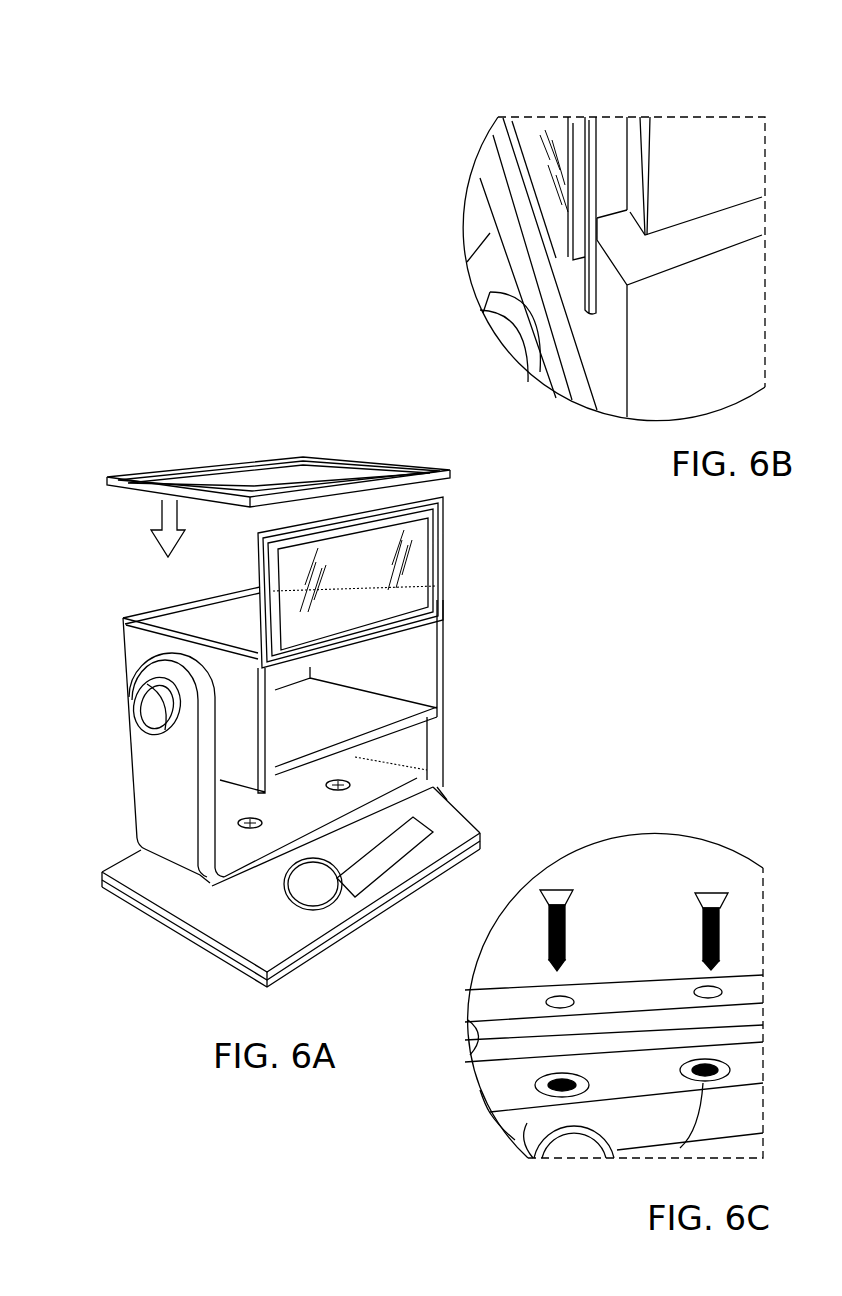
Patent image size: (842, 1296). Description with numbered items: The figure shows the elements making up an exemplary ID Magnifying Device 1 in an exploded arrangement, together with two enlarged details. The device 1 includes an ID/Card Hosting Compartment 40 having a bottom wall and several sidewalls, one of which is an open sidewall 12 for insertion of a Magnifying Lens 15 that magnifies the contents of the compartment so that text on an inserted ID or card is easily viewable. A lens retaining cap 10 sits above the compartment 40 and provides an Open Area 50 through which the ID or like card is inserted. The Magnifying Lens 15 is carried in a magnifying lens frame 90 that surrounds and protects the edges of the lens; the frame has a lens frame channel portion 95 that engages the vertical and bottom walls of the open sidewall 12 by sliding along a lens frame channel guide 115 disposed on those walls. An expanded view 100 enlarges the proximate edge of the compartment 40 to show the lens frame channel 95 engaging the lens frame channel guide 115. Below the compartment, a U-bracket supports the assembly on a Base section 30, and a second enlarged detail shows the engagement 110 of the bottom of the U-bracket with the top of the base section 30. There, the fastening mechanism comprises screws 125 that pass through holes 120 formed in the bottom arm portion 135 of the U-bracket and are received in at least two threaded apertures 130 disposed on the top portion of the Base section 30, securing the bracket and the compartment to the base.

In FIG. 6A, the ID Magnifying Device 1 is at (283, 330).
In FIG. 6A, the lens retaining cap 10 is at (176, 474).
In FIG. 6A, the open sidewall 12 is at (380, 712).
In FIG. 6A, the Magnifying Lens 15 is at (444, 548).
In FIG. 6A, the Base section 30 is at (153, 872).
In FIG. 6A, the ID/Card Hosting Compartment 40 is at (225, 718).
In FIG. 6A, the Open Area 50 is at (260, 477).
In FIG. 6A, the magnifying lens frame 90 is at (453, 471).
In FIG. 6A, the lens frame channel portion 95 is at (258, 617).
In FIG. 6B, the lens frame channel portion 95 is at (622, 140).
In FIG. 6A, the expanded view 100 is at (240, 672).
In FIG. 6B, the expanded view 100 is at (455, 226).
In FIG. 6A, the engagement of the U-bracket and base section 110 is at (227, 830).
In FIG. 6C, the engagement of the U-bracket and base section 110 is at (497, 1120).
In FIG. 6A, the lens frame channel guide 115 is at (220, 780).
In FIG. 6B, the lens frame channel guide 115 is at (647, 190).
In FIG. 6C, the holes 120 is at (707, 985).
In FIG. 6C, the screws 125 is at (706, 960).
In FIG. 6C, the threaded apertures 130 is at (533, 1158).
In FIG. 6C, the bottom arm portion 135 is at (465, 1053).